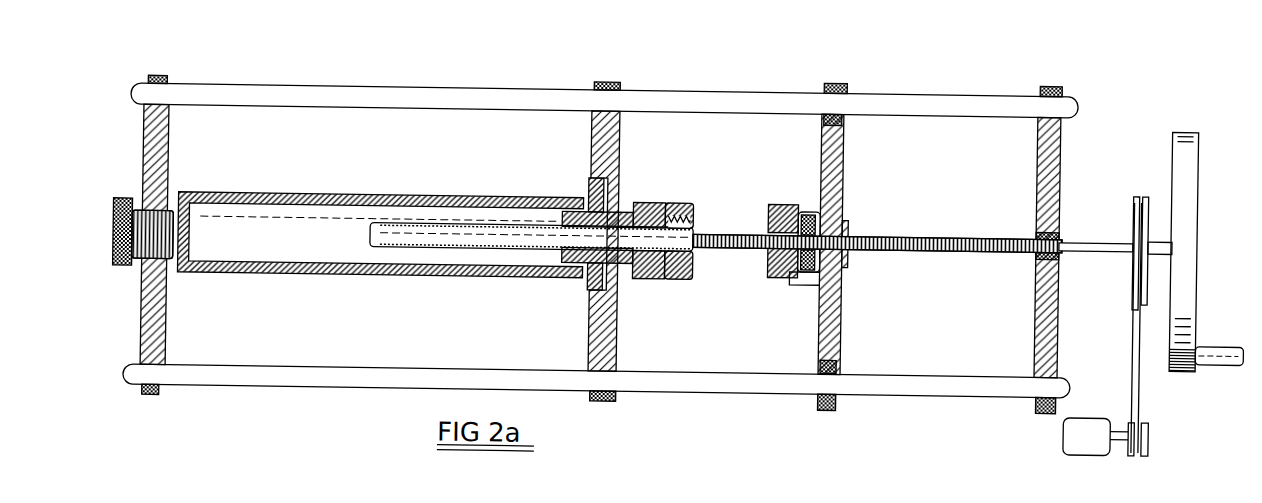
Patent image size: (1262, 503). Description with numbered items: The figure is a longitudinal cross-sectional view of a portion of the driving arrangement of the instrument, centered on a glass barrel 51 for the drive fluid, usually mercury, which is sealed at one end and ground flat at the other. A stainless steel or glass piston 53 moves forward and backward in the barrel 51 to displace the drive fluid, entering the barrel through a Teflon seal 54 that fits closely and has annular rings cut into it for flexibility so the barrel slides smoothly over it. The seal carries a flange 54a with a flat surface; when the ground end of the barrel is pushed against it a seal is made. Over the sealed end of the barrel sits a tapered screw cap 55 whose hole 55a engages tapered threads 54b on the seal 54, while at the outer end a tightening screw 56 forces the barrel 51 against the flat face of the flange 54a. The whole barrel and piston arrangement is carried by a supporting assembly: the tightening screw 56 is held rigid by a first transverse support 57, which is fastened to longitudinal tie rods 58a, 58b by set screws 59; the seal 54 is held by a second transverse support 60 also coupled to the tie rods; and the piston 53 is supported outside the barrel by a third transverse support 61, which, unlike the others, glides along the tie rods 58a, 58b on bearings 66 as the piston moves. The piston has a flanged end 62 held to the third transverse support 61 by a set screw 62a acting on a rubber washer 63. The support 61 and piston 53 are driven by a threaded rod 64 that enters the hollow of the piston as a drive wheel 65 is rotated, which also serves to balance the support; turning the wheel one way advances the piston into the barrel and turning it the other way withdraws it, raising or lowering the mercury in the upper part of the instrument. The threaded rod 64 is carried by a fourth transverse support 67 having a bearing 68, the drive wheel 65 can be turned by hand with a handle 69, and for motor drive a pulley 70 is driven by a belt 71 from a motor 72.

The barrel 51 is at (343, 198).
The piston 53 is at (370, 238).
The seal 54 is at (570, 212).
The flange 54a is at (590, 185).
The tapered threads 54b is at (636, 203).
The tapered screw cap 55 is at (666, 204).
The hole 55a is at (692, 222).
The tightening screw 56 is at (120, 248).
The first transverse support 57 is at (167, 157).
The longitudinal tie rod 58a is at (266, 79).
The longitudinal tie rod 58b is at (307, 391).
The set screws 59 is at (154, 82).
The second transverse support 60 is at (617, 140).
The third transverse support 61 is at (842, 170).
The flanged end 62 is at (812, 222).
The set screw 62a is at (770, 212).
The rubber washer 63 is at (795, 284).
The threaded rod 64 is at (912, 233).
The drive wheel 65 is at (1194, 170).
The bearings 66 is at (820, 365).
The fourth transverse support 67 is at (1060, 150).
The bearing 68 is at (1060, 240).
The handle 69 is at (1222, 356).
The pulley 70 is at (1133, 192).
The belt 71 is at (1133, 370).
The motor 72 is at (1090, 449).